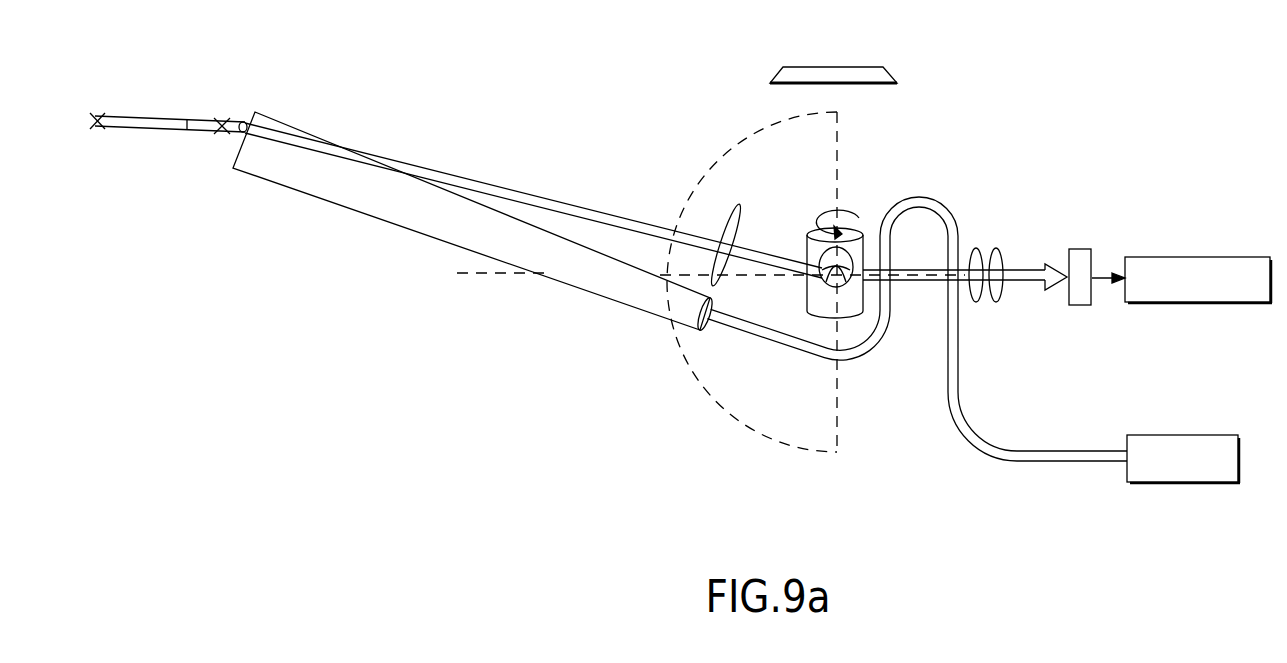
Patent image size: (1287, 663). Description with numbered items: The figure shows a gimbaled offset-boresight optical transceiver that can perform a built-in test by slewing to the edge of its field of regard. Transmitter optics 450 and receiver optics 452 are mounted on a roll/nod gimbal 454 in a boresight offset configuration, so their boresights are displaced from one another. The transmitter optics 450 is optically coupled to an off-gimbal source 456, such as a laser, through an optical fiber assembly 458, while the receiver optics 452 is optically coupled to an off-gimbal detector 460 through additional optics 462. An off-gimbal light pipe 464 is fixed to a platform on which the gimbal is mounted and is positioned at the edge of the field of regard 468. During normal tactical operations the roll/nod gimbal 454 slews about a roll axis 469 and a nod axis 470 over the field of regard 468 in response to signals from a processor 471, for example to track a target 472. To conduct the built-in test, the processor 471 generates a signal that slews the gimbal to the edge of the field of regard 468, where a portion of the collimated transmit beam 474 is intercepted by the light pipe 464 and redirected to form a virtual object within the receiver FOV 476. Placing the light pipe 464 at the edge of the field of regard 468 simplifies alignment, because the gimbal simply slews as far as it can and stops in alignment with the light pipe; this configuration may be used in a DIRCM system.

The transmitter optics 450 is at (706, 330).
The receiver optics 452 is at (723, 216).
The roll/nod gimbal 454 is at (860, 218).
The off-gimbal source 456 is at (1182, 484).
The optical fiber assembly 458 is at (1004, 440).
The off-gimbal detector 460 is at (1082, 307).
The additional optics 462 is at (983, 250).
The off-gimbal light pipe 464 is at (803, 64).
The field of regard 468 is at (742, 149).
The roll axis 469 is at (460, 275).
The nod axis 470 is at (840, 162).
The processor 471 is at (1177, 258).
The target 472 is at (132, 130).
The collimated transmit beam 474 is at (563, 278).
The receiver FOV 476 is at (547, 193).